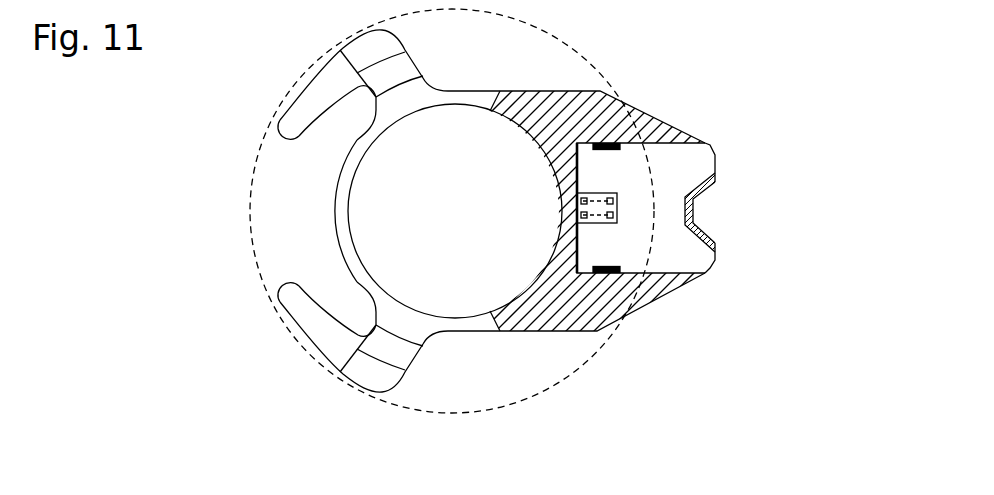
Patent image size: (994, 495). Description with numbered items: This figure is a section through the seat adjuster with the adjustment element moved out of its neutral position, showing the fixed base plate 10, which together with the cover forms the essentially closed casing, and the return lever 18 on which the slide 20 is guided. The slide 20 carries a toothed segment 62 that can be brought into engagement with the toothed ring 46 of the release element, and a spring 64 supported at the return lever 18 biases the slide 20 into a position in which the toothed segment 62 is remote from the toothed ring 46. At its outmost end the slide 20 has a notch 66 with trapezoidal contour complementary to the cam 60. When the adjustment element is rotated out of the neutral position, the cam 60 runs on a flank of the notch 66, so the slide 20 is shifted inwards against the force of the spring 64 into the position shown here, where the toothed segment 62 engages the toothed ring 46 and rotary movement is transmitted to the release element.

The base plate 10 is at (250, 211).
The return lever 18 is at (549, 86).
The slide 20 is at (710, 267).
The toothed ring 46 is at (600, 348).
The cam 60 is at (697, 208).
The toothed segment 62 is at (652, 178).
The spring 64 is at (592, 194).
The notch 66 is at (714, 181).